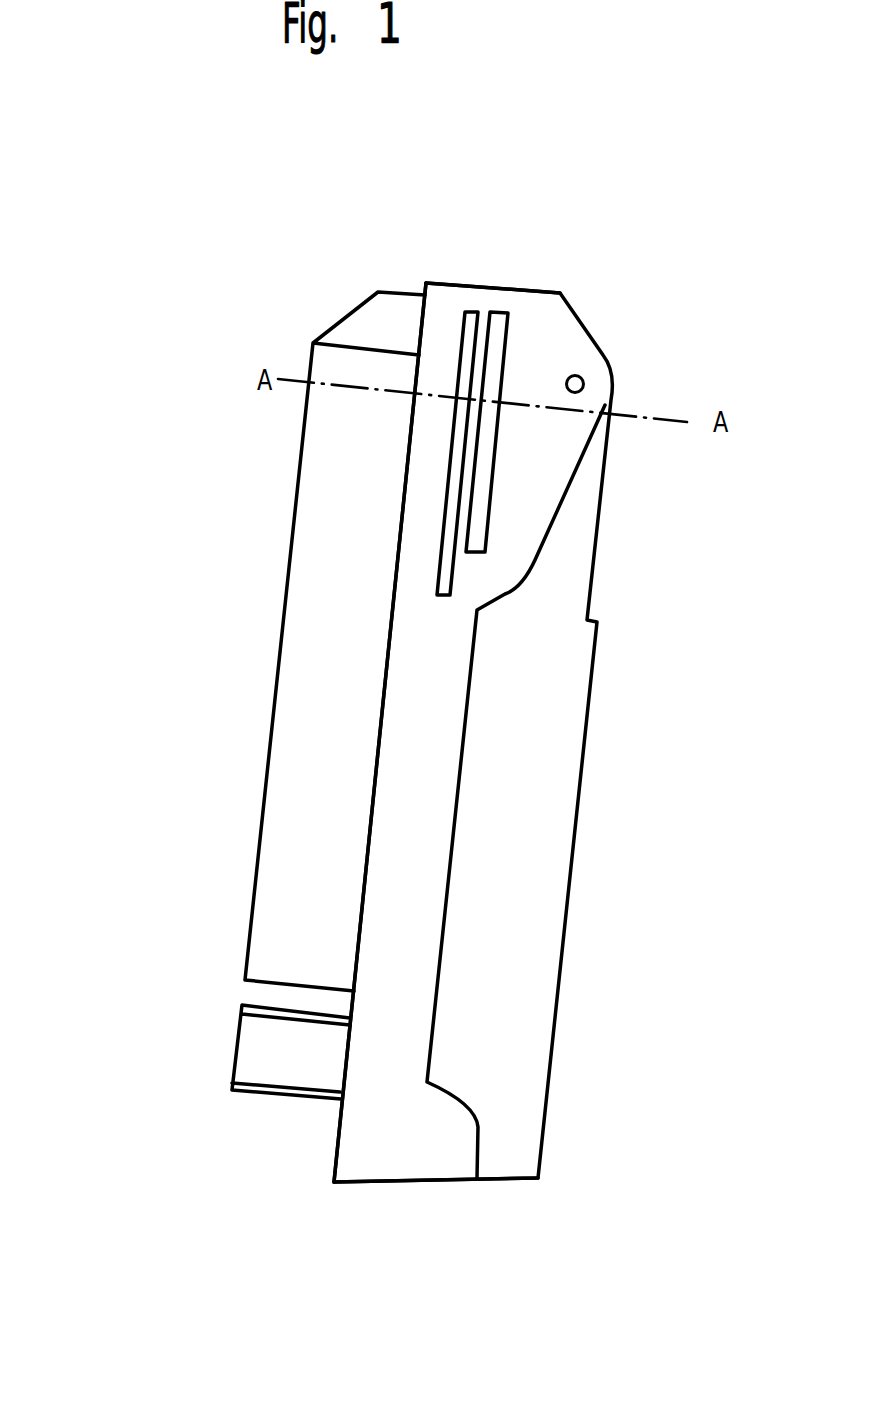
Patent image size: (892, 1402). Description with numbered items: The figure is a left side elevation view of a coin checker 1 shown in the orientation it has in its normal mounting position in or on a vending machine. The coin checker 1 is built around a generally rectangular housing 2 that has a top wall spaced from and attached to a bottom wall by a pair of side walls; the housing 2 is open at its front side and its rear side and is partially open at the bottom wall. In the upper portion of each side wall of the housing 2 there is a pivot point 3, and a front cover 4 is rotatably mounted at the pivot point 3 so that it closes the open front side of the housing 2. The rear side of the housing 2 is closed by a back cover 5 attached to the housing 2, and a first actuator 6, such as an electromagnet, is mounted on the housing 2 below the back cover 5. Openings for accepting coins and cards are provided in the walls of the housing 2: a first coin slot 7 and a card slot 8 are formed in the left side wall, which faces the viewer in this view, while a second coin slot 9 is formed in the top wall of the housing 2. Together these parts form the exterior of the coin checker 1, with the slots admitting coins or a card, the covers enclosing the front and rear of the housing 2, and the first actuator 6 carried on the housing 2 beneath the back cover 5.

The coin checker 1 is at (618, 718).
The housing 2 is at (395, 1138).
The pivot point 3 is at (583, 377).
The front cover 4 is at (497, 1070).
The back cover 5 is at (345, 633).
The first actuator 6 is at (292, 1057).
The first coin slot 7 is at (510, 338).
The card slot 8 is at (467, 346).
The second coin slot 9 is at (503, 285).